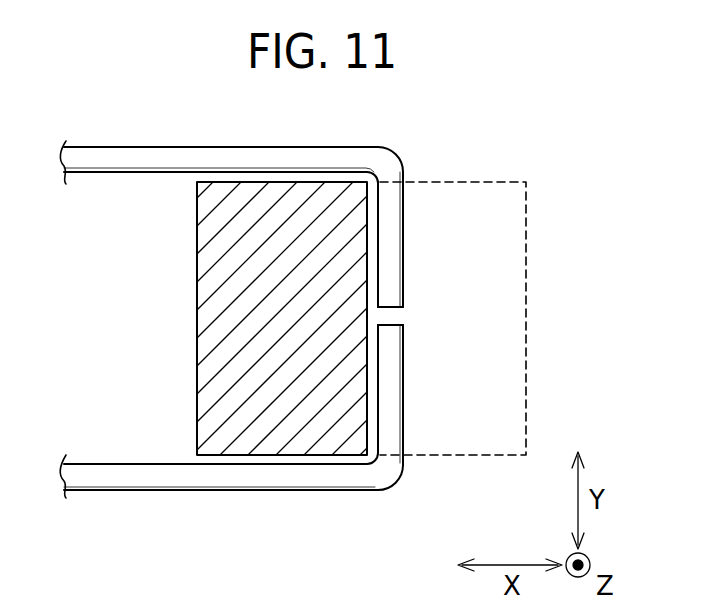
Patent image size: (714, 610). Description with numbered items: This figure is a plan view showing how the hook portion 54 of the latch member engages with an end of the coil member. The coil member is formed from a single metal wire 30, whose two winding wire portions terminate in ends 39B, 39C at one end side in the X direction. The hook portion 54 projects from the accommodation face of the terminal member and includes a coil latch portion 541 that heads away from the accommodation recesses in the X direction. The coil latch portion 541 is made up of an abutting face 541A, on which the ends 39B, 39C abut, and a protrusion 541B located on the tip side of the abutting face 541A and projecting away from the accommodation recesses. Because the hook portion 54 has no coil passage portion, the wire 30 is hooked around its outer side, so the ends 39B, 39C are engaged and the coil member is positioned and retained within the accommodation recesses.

The wire 30 is at (129, 163).
The hook portion 54 is at (261, 203).
The abutting face 541A is at (366, 244).
The protrusion 541B is at (526, 214).
The end 39C is at (392, 301).
The end 39B is at (392, 341).
The coil latch portion 541 is at (536, 388).